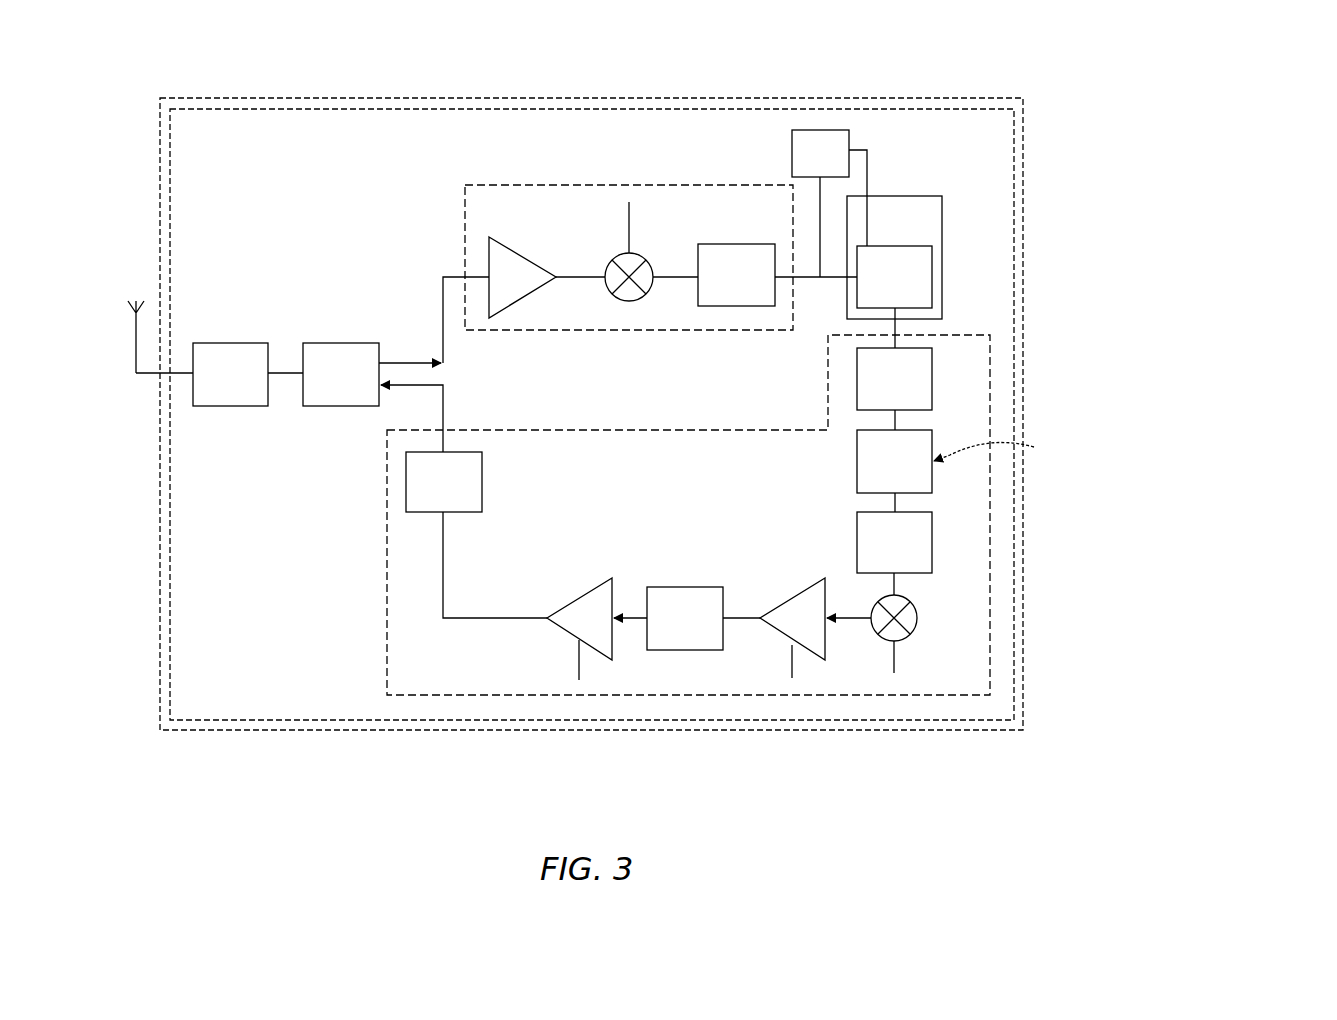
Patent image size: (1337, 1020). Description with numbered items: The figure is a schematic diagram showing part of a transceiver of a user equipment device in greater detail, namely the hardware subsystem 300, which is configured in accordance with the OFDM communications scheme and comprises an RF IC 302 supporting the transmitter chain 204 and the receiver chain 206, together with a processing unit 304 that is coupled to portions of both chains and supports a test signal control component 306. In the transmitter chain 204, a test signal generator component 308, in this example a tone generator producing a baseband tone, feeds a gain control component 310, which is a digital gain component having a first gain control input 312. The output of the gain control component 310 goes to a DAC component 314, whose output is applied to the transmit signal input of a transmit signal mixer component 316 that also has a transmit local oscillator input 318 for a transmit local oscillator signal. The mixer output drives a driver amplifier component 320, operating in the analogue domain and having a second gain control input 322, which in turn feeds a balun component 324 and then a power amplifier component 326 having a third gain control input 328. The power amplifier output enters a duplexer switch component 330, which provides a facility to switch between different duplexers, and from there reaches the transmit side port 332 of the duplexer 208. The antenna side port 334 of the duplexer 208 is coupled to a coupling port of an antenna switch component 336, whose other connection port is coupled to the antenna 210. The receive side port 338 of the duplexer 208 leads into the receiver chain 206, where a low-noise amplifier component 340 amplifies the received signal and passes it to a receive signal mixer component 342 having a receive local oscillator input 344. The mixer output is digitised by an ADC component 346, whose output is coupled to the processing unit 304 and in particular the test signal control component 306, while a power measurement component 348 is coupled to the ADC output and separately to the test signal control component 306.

The transmitter chain 204 is at (387, 683).
The receiver chain 206 is at (465, 198).
The duplexer 208 is at (328, 397).
The antenna 210 is at (130, 311).
The hardware subsystem 300 is at (197, 735).
The RF IC 302 is at (990, 732).
The processing unit 304 is at (904, 214).
The test signal control component 306 is at (932, 277).
The test signal generator component 308 is at (920, 377).
The gain control component 310 is at (906, 462).
The first gain control input 312 is at (1081, 457).
The DAC component 314 is at (925, 540).
The transmit signal mixer component 316 is at (917, 618).
The transmit local oscillator input 318 is at (897, 655).
The driver amplifier component 320 is at (786, 610).
The second gain control input 322 is at (790, 668).
The balun component 324 is at (682, 600).
The power amplifier component 326 is at (590, 608).
The third gain control input 328 is at (598, 668).
The duplexer switch component 330 is at (468, 498).
The transmit side port 332 is at (387, 390).
The antenna side port 334 is at (299, 378).
The antenna switch component 336 is at (230, 358).
The receive side port 338 is at (382, 362).
The low-noise amplifier component 340 is at (504, 300).
The receive signal mixer component 342 is at (640, 248).
The receive local oscillator input 344 is at (622, 225).
The ADC component 346 is at (731, 308).
The power measurement component 348 is at (818, 130).